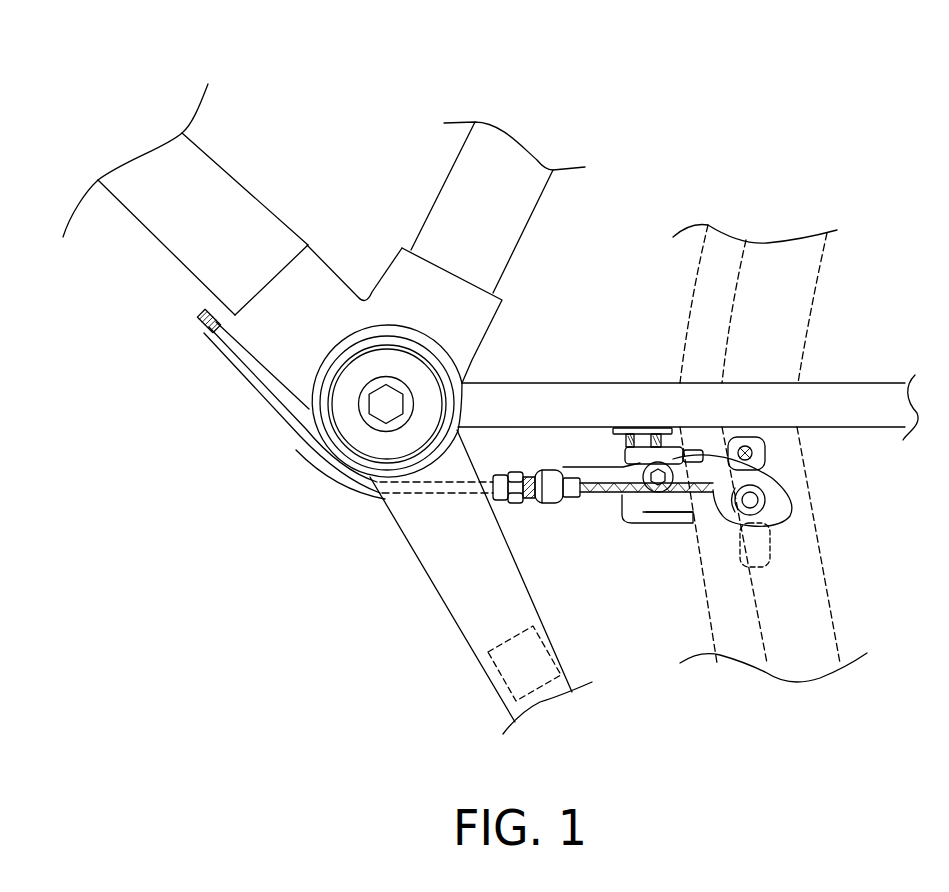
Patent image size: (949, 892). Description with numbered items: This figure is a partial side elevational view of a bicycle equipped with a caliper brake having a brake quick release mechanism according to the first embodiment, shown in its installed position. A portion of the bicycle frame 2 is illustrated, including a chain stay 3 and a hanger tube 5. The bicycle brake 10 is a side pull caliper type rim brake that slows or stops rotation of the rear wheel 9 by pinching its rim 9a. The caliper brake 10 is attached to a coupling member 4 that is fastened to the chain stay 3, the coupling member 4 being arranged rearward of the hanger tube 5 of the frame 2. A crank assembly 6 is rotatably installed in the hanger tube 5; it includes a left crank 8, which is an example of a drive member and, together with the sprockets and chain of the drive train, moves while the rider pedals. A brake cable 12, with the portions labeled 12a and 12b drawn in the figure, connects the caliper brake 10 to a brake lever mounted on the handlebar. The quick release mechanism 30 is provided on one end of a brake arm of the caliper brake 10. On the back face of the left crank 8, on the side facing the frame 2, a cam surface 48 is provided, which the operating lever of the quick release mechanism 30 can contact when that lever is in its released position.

The bicycle frame 2 is at (262, 190).
The chain stay 3 is at (567, 386).
The coupling member 4 is at (632, 427).
The hanger tube 5 is at (305, 462).
The crank assembly 6 is at (355, 544).
The left crank 8 is at (448, 598).
The rear wheel 9 is at (703, 645).
The rim 9a is at (797, 673).
The caliper brake 10 is at (645, 547).
The brake cable 12 is at (230, 372).
The cable outer casing end 12a is at (203, 323).
The inner wire 12b is at (276, 416).
The quick release mechanism 30 is at (673, 534).
The cam surface 48 is at (490, 678).